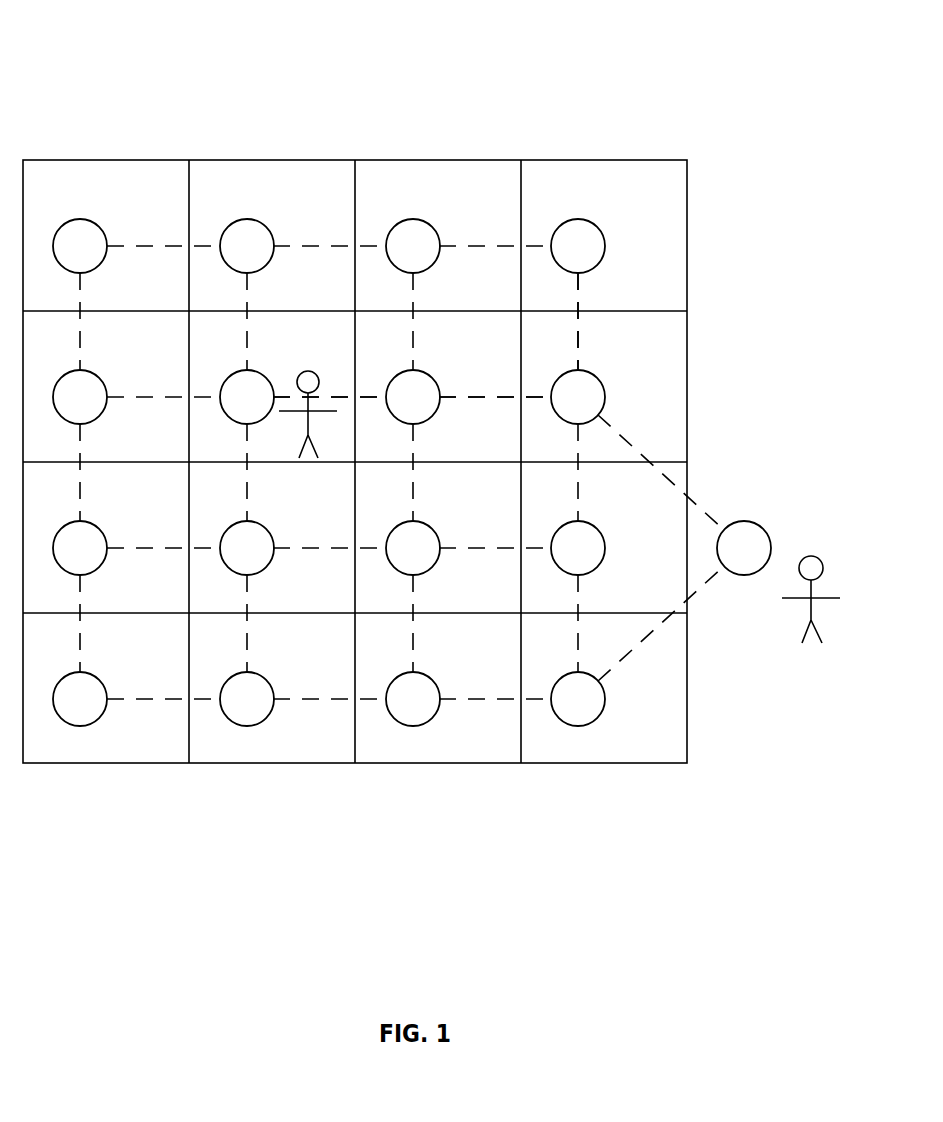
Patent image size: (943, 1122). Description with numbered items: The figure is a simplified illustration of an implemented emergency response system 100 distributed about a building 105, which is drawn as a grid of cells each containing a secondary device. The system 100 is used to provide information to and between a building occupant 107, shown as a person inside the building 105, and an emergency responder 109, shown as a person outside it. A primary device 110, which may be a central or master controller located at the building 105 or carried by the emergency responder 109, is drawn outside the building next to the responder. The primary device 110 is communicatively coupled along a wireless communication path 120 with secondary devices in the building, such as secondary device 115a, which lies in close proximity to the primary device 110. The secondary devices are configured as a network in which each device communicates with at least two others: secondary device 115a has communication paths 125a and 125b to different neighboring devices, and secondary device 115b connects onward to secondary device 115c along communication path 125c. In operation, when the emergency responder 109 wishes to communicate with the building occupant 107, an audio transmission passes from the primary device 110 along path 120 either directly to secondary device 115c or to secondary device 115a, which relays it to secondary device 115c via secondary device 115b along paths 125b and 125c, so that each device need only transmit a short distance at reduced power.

The emergency response system 100 is at (144, 98).
The building 105 is at (433, 160).
The building occupant 107 is at (300, 372).
The emergency responder 109 is at (812, 556).
The primary device 110 is at (747, 521).
The secondary device 115a is at (603, 385).
The secondary device 115b is at (435, 415).
The secondary device 115c is at (225, 415).
The wireless communication path 120 is at (672, 478).
The communication path 125a is at (582, 340).
The communication path 125b is at (478, 396).
The communication path 125c is at (332, 396).